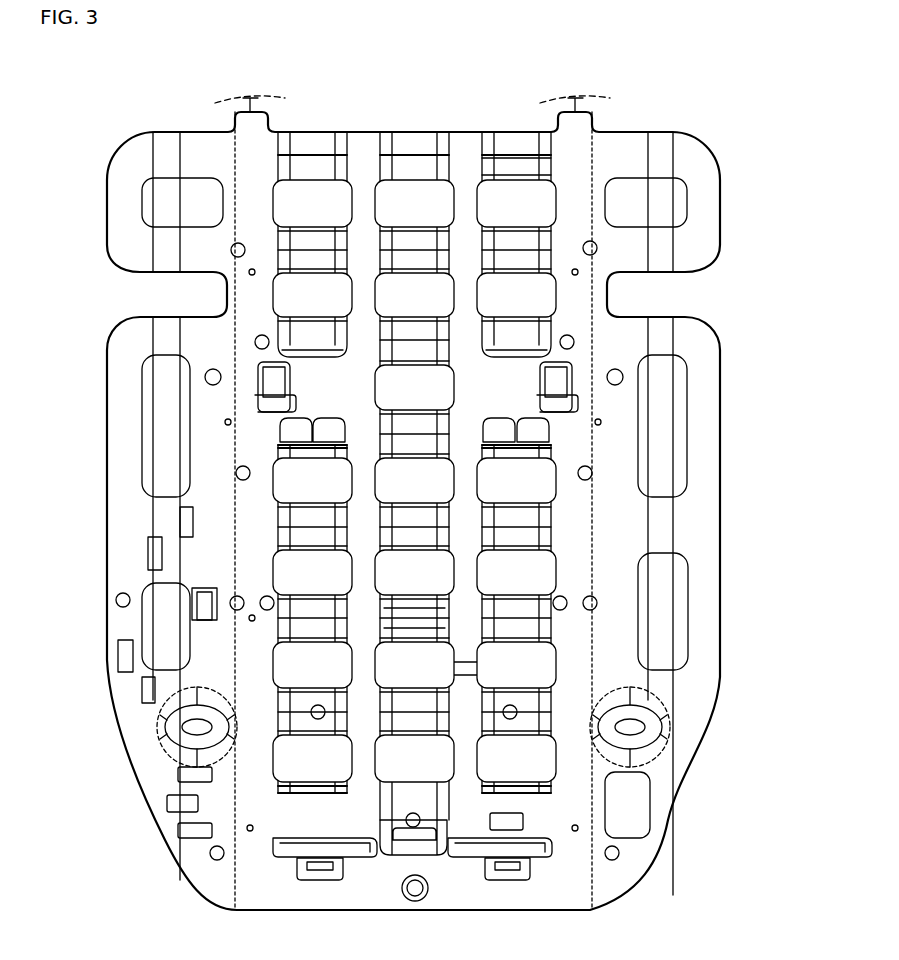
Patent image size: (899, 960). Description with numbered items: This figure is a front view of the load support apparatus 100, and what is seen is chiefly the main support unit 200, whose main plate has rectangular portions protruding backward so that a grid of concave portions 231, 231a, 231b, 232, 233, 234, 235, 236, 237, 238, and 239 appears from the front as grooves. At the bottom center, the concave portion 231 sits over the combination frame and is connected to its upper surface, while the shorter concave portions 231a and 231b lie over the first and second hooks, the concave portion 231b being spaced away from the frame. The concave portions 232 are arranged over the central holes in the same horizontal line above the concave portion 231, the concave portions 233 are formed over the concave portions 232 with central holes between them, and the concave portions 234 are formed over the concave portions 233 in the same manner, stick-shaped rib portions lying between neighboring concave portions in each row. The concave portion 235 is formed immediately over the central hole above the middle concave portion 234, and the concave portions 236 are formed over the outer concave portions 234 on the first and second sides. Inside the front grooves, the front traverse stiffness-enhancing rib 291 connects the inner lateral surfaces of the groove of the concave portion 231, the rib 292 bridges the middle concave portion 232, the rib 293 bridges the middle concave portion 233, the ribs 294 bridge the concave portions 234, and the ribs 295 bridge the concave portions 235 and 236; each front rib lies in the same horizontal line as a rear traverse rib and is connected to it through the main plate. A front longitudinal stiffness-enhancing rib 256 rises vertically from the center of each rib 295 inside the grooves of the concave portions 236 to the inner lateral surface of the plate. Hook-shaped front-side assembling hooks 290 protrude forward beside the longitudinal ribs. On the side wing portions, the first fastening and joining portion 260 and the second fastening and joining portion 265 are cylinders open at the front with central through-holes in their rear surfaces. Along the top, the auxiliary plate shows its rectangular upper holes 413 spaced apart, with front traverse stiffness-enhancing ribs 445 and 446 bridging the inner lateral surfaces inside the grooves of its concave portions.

The load support apparatus 100 is at (150, 102).
The main support unit 200 is at (583, 873).
The upper holes 413 is at (312, 200).
The front traverse stiffness-enhancing ribs 445 is at (530, 230).
The front traverse stiffness-enhancing ribs 446 is at (502, 150).
The concave portion 237 is at (392, 333).
The concave portion 239 is at (300, 341).
The concave portion 238 is at (525, 327).
The concave portion 235 is at (420, 423).
The front-side assembling hook 290 is at (262, 380).
The front traverse stiffness-enhancing ribs 295 is at (558, 392).
The front longitudinal stiffness-enhancing rib 256 is at (287, 435).
The concave portions 236 is at (300, 470).
The concave portions 234 is at (303, 512).
The front traverse stiffness-enhancing ribs 294 is at (297, 527).
The concave portions 233 is at (300, 621).
The front traverse stiffness-enhancing rib 293 is at (390, 618).
The concave portions 232 is at (280, 725).
The second fastening and joining portion 265 is at (183, 737).
The first fastening and joining portion 260 is at (645, 727).
The concave portion 231a is at (607, 795).
The concave portion 231b is at (307, 822).
The front traverse stiffness-enhancing rib 292 is at (368, 820).
The front traverse stiffness-enhancing rib 291 is at (427, 822).
The concave portion 231 is at (415, 900).